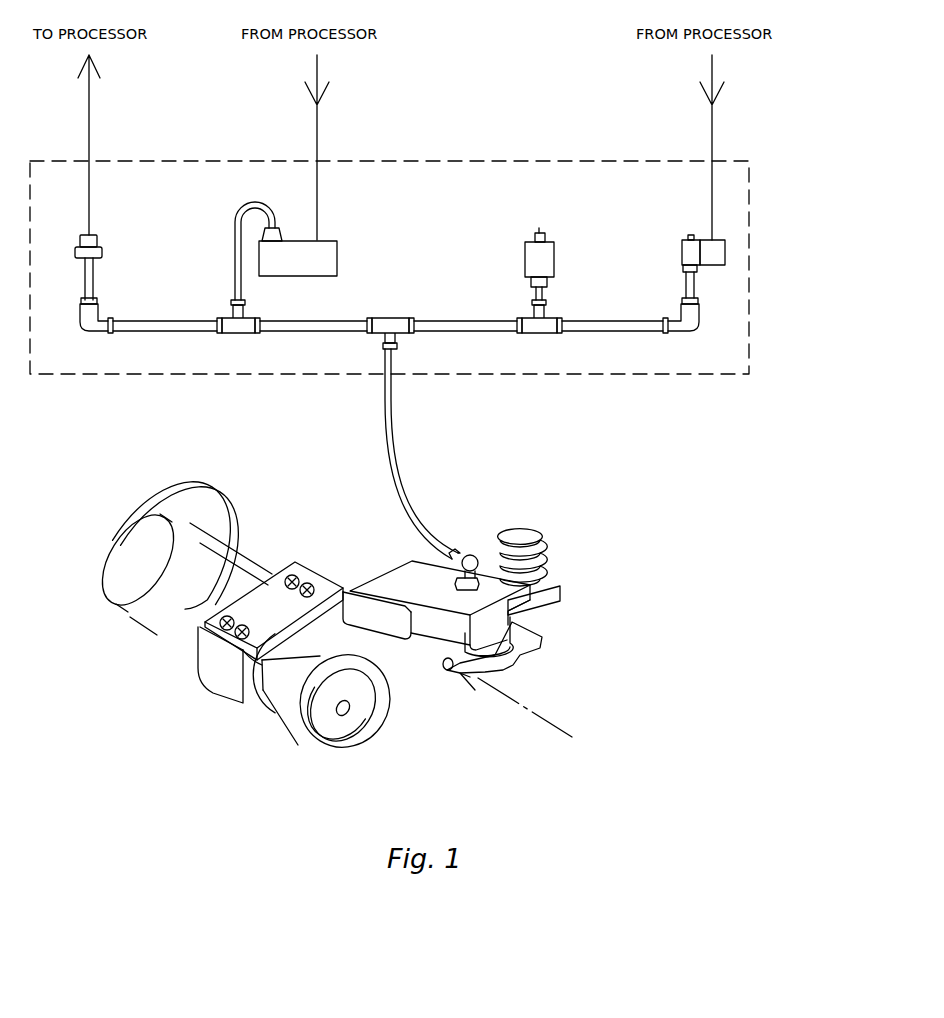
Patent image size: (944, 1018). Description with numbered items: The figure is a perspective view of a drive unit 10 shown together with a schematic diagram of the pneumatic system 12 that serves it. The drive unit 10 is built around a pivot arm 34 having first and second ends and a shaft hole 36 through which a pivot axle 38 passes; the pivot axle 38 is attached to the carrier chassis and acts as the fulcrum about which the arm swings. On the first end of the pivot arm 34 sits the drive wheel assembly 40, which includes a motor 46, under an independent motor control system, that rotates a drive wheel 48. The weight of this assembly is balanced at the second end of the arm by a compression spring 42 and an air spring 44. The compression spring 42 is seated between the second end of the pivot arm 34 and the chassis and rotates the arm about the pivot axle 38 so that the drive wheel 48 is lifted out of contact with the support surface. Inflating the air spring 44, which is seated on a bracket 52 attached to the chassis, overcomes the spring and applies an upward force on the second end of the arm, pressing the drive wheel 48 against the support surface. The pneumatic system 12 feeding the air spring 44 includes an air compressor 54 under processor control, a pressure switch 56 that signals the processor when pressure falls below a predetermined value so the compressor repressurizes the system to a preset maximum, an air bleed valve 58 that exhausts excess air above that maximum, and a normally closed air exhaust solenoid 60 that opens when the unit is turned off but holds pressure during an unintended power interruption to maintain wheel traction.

The drive unit 10 is at (568, 546).
The pneumatic system 12 is at (769, 203).
The pivot arm 34 is at (353, 597).
The shaft hole 36 is at (449, 670).
The pivot axle 38 is at (538, 723).
The drive wheel assembly 40 is at (160, 652).
The compression spring 42 is at (522, 530).
The air spring 44 is at (500, 650).
The motor 46 is at (205, 533).
The drive wheel 48 is at (287, 750).
The bracket 52 is at (540, 633).
The air compressor 54 is at (337, 257).
The pressure switch 56 is at (103, 247).
The air bleed valve 58 is at (556, 252).
The normally closed air exhaust solenoid 60 is at (681, 252).